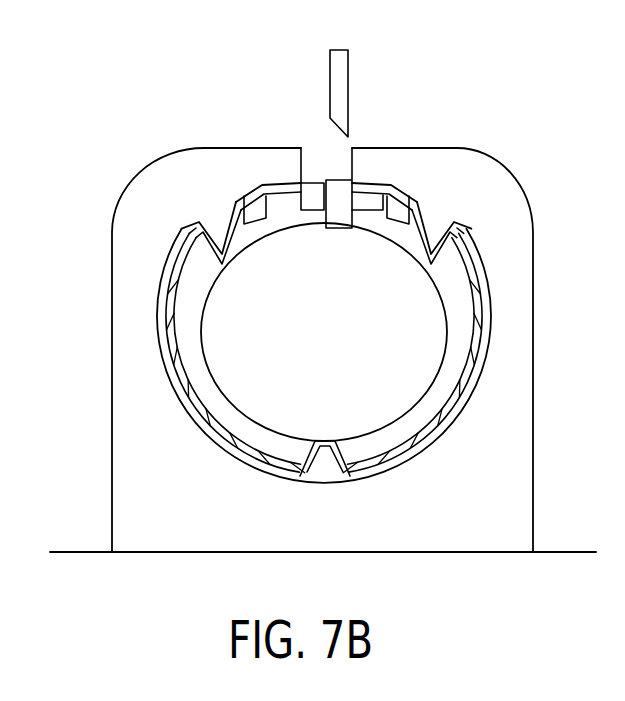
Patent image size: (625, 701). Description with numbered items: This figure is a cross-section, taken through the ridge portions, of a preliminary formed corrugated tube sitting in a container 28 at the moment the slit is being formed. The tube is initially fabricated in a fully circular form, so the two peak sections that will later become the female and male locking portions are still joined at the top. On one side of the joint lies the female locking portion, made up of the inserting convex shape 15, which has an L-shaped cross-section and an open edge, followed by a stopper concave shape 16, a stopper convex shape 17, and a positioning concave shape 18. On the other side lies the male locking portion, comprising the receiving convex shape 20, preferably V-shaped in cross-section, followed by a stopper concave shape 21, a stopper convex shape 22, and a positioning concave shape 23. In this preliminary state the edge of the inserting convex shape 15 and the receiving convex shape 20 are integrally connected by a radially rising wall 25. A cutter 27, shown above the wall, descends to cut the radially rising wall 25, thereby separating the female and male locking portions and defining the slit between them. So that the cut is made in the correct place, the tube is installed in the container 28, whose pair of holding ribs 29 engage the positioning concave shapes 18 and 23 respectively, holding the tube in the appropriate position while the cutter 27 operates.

The inserting convex shape 15 is at (305, 184).
The stopper concave shape 16 is at (296, 215).
The stopper convex shape 17 is at (253, 185).
The positioning concave shape 18 is at (228, 248).
The receiving convex shape 20 is at (363, 178).
The stopper concave shape 21 is at (380, 226).
The stopper convex shape 22 is at (397, 198).
The positioning concave shape 23 is at (420, 250).
The radially rising wall 25 is at (329, 186).
The cutter 27 is at (338, 80).
The container 28 is at (112, 282).
The holding ribs 29 is at (220, 248).